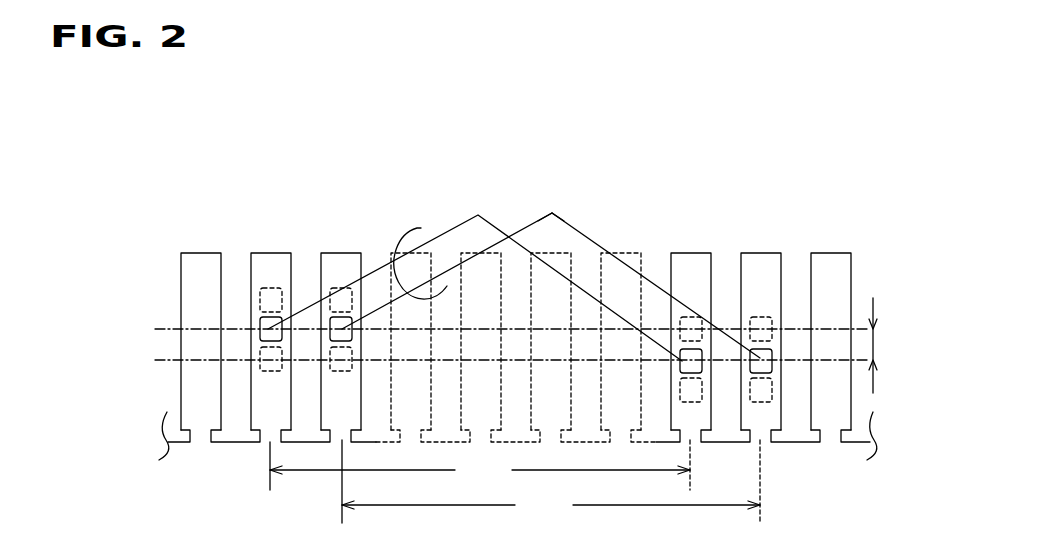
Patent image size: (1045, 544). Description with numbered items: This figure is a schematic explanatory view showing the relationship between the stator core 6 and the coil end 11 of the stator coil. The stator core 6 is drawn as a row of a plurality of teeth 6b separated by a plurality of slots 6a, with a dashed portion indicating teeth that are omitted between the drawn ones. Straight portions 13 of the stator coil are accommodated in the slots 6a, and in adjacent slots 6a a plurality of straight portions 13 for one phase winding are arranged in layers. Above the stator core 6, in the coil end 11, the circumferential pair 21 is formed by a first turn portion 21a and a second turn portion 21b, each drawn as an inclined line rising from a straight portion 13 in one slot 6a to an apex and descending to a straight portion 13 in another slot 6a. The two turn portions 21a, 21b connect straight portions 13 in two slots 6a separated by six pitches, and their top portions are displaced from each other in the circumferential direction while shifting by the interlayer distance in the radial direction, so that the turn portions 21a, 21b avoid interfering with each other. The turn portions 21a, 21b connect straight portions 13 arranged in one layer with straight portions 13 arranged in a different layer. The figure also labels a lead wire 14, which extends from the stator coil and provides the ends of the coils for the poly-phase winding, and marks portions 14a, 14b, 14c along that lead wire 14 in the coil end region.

The stator core 6 is at (204, 210).
The slot 6a is at (200, 400).
The tooth 6b is at (237, 442).
The coil end 11 is at (835, 175).
The straight portion 13 is at (329, 331).
The lead wire 14 is at (600, 245).
The first inclined portion of coil end 14a is at (528, 228).
The second inclined portion of coil end 14b is at (575, 228).
The apex portion of coil end 14c is at (552, 213).
The circumferential pair 21 is at (417, 228).
The first turn portion 21a is at (380, 266).
The second turn portion 21b is at (450, 268).